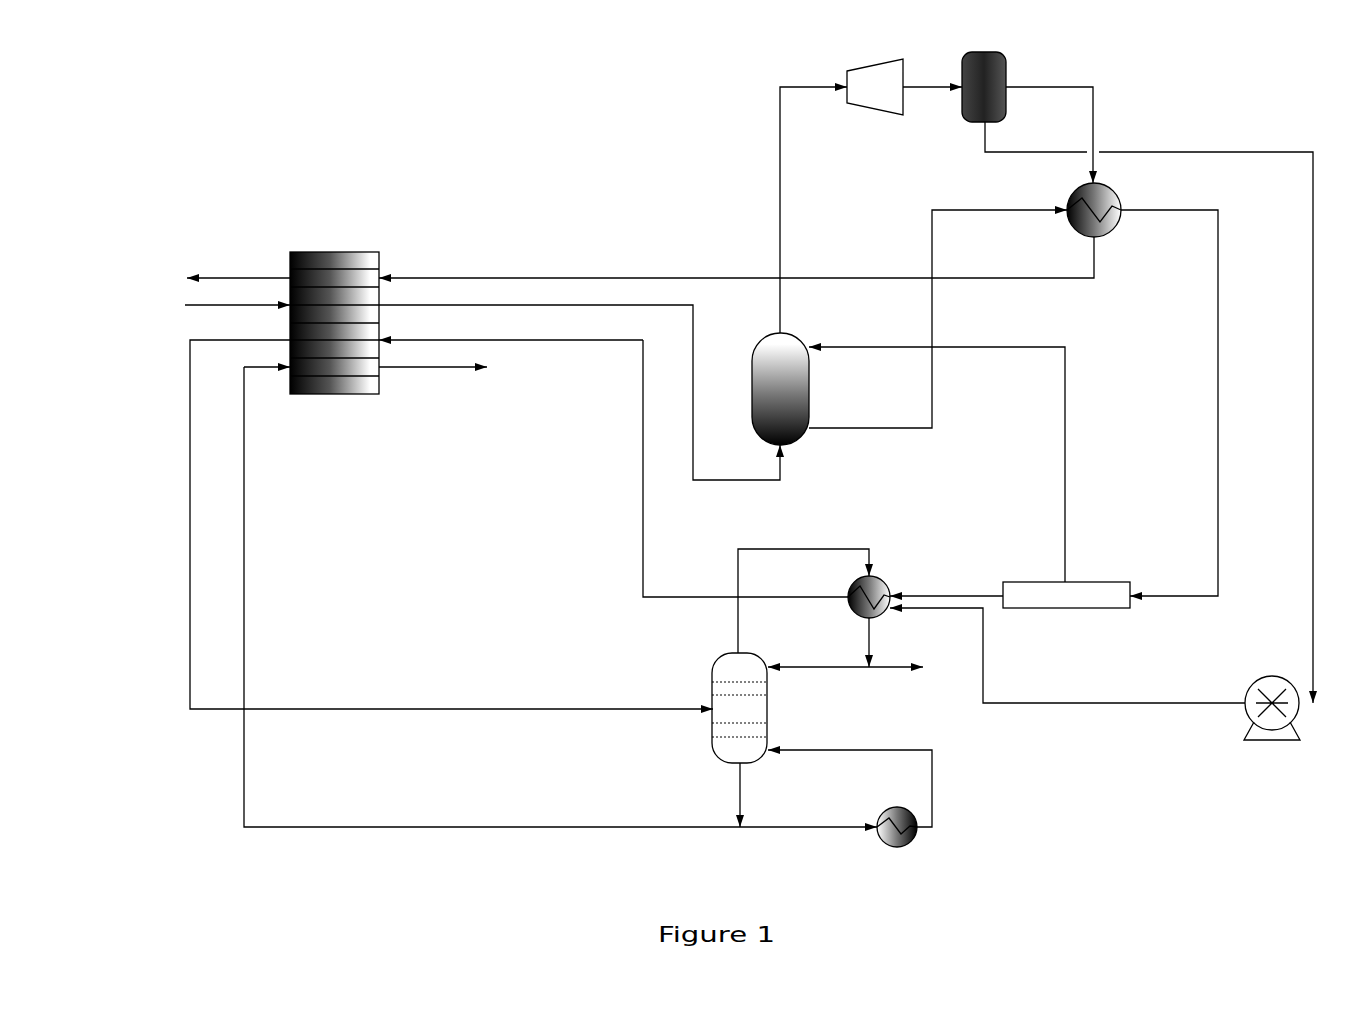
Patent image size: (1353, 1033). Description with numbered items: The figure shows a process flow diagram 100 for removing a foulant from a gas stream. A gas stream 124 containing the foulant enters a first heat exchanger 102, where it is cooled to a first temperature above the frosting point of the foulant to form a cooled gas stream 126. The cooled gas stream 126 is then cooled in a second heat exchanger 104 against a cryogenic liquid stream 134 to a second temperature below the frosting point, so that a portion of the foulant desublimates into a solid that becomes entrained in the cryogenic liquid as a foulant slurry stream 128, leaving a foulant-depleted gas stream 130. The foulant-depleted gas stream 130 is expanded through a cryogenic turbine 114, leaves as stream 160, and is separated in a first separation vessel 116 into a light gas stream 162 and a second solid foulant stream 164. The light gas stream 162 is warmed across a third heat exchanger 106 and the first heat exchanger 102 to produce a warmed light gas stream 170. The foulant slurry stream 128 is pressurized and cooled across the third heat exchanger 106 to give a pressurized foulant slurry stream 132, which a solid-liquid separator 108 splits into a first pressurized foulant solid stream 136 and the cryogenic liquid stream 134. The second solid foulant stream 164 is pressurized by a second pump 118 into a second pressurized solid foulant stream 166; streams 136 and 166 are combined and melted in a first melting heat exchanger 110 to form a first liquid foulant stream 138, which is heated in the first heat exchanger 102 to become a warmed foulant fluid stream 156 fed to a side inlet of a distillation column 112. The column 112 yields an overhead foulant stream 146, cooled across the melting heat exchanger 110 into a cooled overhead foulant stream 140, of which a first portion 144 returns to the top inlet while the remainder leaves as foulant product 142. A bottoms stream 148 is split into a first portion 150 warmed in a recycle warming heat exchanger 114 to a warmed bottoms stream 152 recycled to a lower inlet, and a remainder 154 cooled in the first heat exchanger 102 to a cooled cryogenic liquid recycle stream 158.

The process flow diagram 100 is at (305, 80).
The first heat exchanger 102 is at (288, 262).
The second heat exchanger 104 is at (752, 342).
The third heat exchanger 106 is at (1074, 195).
The solid-liquid separator 108 is at (1085, 611).
The first melting heat exchanger 110 is at (885, 580).
The distillation column 112 is at (710, 662).
The cryogenic turbine / recycle warming heat exchanger 114 is at (865, 62).
The first separation vessel 116 is at (978, 52).
The second pump 118 is at (1246, 690).
The gas stream 124 is at (220, 305).
The cooled gas stream 126 is at (579, 382).
The foulant slurry stream 128 is at (938, 320).
The foulant-depleted gas stream 130 is at (794, 210).
The pressurized foulant slurry stream 132 is at (1169, 403).
The cryogenic liquid stream 134 is at (940, 451).
The first pressurized foulant solid stream 136 is at (946, 587).
The first liquid foulant stream 138 is at (613, 469).
The cooled overhead foulant stream 140 is at (891, 642).
The foulant product 142 is at (918, 669).
The first portion of cooled overhead foulant stream 144 is at (818, 655).
The overhead foulant stream 146 is at (803, 587).
The bottoms stream 148 is at (722, 795).
The first portion of bottoms stream 150 is at (808, 815).
The warmed bottoms stream 152 is at (850, 778).
The remainder of bottoms stream 154 is at (492, 597).
The warmed foulant fluid stream 156 is at (451, 525).
The cooled cryogenic liquid recycle stream 158 is at (456, 368).
The expanded foulant-depleted gas stream 160 is at (932, 74).
The light gas stream 162 is at (1049, 122).
The second solid foulant stream 164 is at (1149, 412).
The second pressurized solid foulant stream 166 is at (1067, 655).
The warmed light gas stream 170 is at (220, 278).